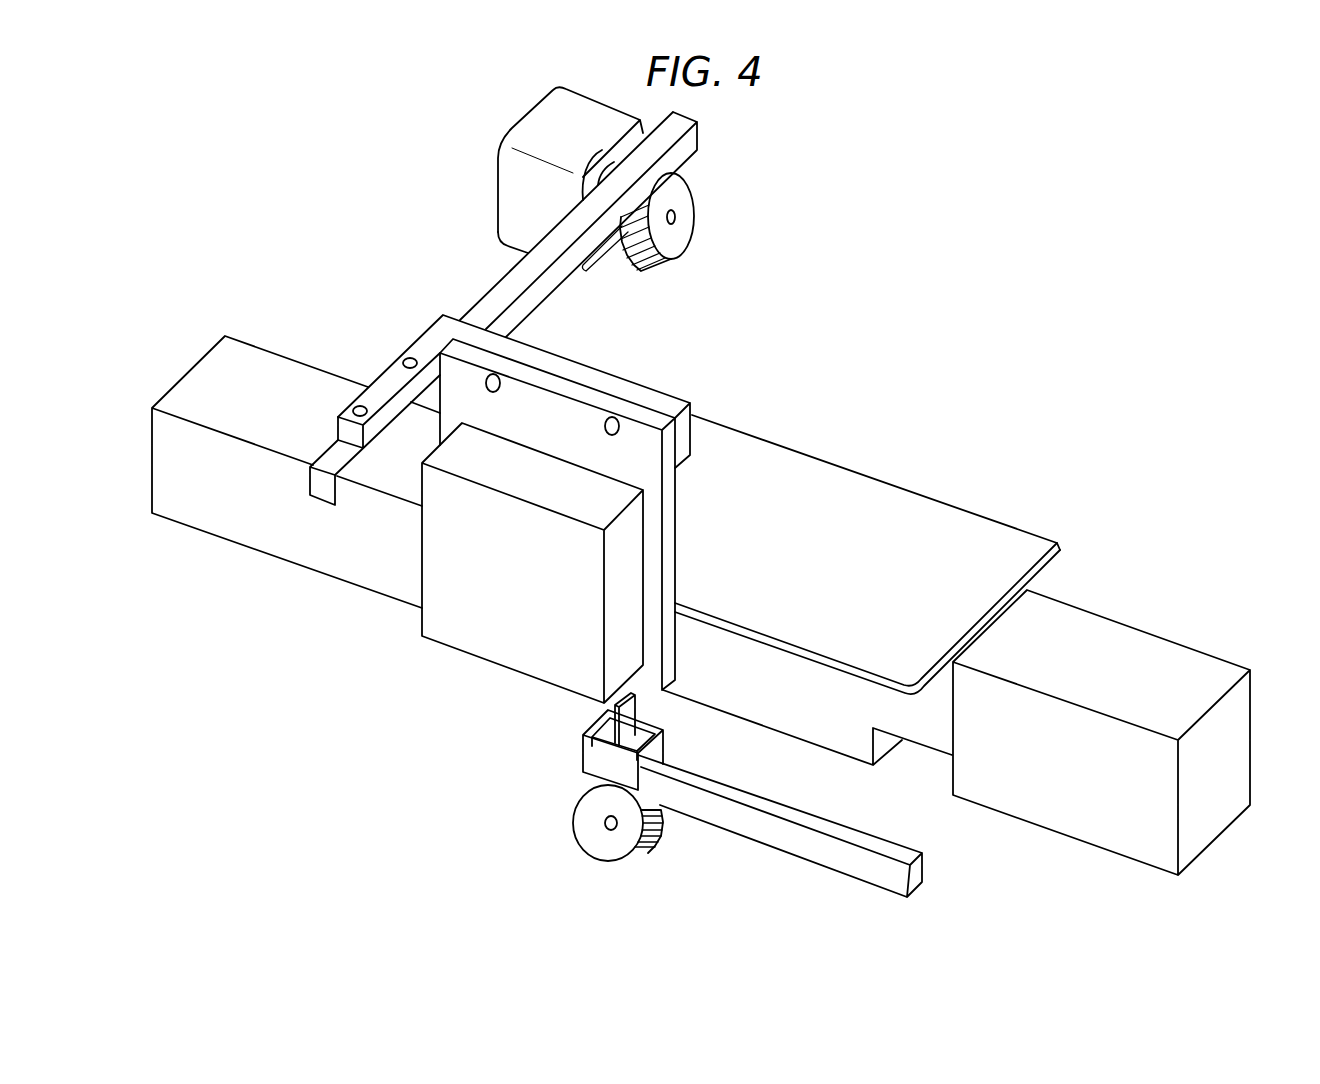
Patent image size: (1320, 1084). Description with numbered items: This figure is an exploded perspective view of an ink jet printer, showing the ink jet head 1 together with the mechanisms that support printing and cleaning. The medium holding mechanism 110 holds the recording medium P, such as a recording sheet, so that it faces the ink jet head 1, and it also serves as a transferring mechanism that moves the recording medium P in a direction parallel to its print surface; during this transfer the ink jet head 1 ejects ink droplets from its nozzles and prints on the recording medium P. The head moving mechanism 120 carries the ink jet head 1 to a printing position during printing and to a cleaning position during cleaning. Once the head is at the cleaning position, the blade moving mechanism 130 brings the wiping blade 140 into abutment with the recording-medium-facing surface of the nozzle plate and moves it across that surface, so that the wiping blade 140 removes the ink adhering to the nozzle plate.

The ink jet head 1 is at (440, 662).
The head moving mechanism 120 is at (487, 187).
The recording medium P is at (843, 497).
The medium holding mechanism 110 is at (1131, 645).
The wiping blade 140 is at (641, 717).
The blade moving mechanism 130 is at (845, 886).